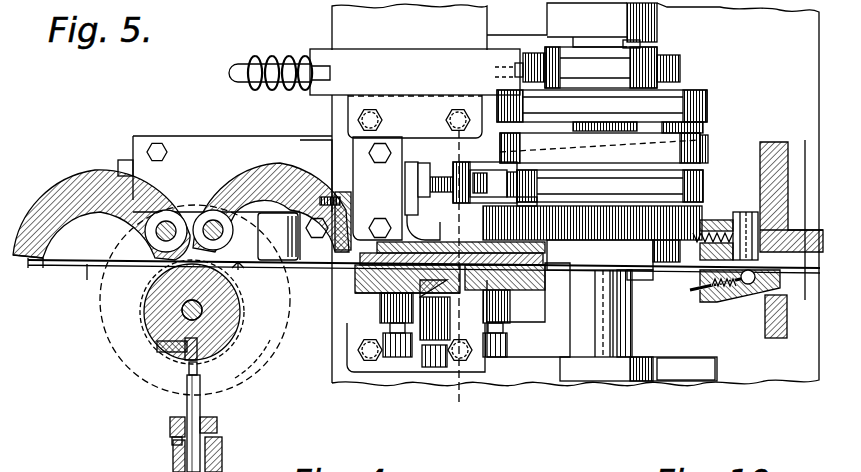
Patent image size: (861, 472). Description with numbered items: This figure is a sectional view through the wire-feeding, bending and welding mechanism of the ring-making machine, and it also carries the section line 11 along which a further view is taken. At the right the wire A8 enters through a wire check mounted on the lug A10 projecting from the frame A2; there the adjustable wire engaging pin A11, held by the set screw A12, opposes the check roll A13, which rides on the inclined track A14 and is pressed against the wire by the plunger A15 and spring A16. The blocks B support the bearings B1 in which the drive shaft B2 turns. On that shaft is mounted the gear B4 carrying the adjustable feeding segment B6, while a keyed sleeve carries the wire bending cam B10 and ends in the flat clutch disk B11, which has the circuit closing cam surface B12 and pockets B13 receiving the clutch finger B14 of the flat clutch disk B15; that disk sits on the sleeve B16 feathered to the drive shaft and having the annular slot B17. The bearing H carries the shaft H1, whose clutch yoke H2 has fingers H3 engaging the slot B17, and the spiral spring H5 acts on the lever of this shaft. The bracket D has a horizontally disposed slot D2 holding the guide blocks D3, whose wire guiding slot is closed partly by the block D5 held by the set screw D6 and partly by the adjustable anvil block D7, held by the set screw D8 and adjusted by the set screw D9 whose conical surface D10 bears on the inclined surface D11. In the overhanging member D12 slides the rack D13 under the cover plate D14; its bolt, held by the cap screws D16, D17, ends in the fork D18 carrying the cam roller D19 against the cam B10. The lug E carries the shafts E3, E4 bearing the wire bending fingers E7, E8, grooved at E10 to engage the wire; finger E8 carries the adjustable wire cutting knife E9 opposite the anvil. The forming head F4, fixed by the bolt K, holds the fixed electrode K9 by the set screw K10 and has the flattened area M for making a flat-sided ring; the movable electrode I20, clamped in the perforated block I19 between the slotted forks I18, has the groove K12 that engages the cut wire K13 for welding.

The bearing H is at (357, 68).
The shaft H1 is at (236, 71).
The spiral spring H5 is at (257, 64).
The clutch yoke H2 is at (530, 58).
The fingers H3 is at (535, 54).
The bracket D is at (420, 224).
The horizontally disposed slot D2 is at (527, 314).
The guide blocks D3 is at (545, 263).
The block D5 is at (560, 285).
The set screw D6 is at (507, 341).
The adjustable anvil block D7 is at (340, 283).
The set screw D8 is at (406, 356).
The set screw D9 is at (443, 369).
The conical surface D10 is at (437, 359).
The inclined surface D11 is at (392, 293).
The overhanging member D12 is at (288, 138).
The rack D13 is at (410, 157).
The cover plate D14 is at (230, 152).
The cap screw D16 is at (116, 165).
The cap screw D17 is at (427, 157).
The fork D18 is at (480, 157).
The cam roller D19 is at (493, 183).
The lug E is at (224, 279).
The shaft E3 is at (172, 222).
The shaft E4 is at (214, 221).
The wire bending finger E7 is at (44, 228).
The wire bending finger E8 is at (333, 196).
The adjustable wire cutting knife E9 is at (440, 186).
The grooved outer ends E10 is at (30, 268).
The bolt K is at (183, 305).
The fixed electrode K9 is at (200, 346).
The set screw K10 is at (162, 346).
The horizontal groove K12 is at (232, 405).
The wire K13 is at (73, 289).
The forming head F4 is at (152, 315).
The flattened area M is at (241, 274).
The slotted forks I18 is at (176, 428).
The perforated block I19 is at (176, 444).
The electrode I20 is at (190, 406).
The section line 11— 11 is at (471, 152).
The blocks B is at (677, 378).
The bearings B1 is at (600, 406).
The drive shaft B2 is at (620, 331).
The gear B4 is at (704, 205).
The adjustable feeding segment B6 is at (627, 295).
The wire bending cam B10 is at (610, 188).
The flat clutch disk B11 is at (705, 156).
The circuit closing cam surface B12 is at (600, 148).
The pockets B13 is at (703, 134).
The clutch finger B14 is at (673, 122).
The flat clutch disk B15 is at (647, 103).
The sleeve B16 is at (588, 53).
The annular slot B17 is at (601, 67).
The frame A2 is at (775, 339).
The wire A8 is at (800, 268).
The lug A10 is at (776, 192).
The adjustable wire engaging pin A11 is at (774, 232).
The set screw A12 is at (733, 218).
The check roll A13 is at (749, 285).
The inclined track A14 is at (778, 302).
The plunger A15 is at (735, 302).
The spring A16 is at (713, 304).